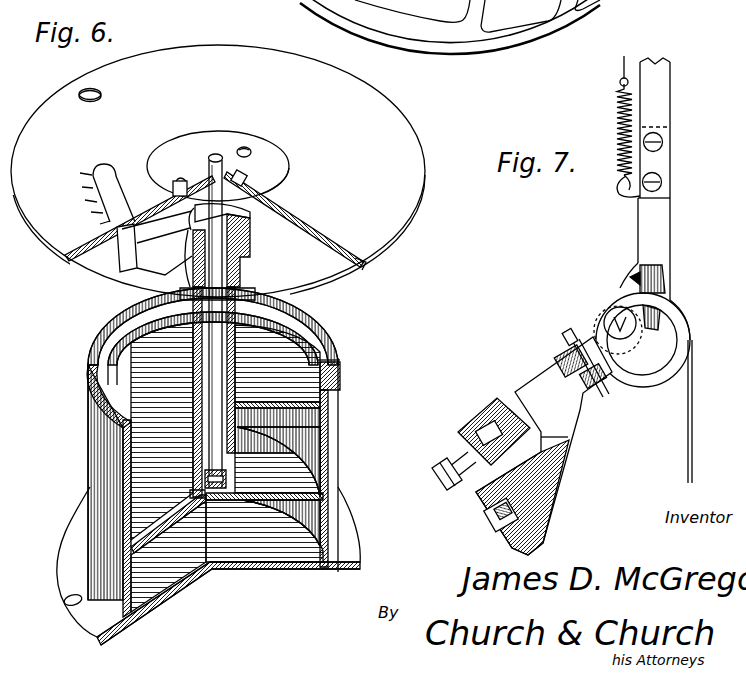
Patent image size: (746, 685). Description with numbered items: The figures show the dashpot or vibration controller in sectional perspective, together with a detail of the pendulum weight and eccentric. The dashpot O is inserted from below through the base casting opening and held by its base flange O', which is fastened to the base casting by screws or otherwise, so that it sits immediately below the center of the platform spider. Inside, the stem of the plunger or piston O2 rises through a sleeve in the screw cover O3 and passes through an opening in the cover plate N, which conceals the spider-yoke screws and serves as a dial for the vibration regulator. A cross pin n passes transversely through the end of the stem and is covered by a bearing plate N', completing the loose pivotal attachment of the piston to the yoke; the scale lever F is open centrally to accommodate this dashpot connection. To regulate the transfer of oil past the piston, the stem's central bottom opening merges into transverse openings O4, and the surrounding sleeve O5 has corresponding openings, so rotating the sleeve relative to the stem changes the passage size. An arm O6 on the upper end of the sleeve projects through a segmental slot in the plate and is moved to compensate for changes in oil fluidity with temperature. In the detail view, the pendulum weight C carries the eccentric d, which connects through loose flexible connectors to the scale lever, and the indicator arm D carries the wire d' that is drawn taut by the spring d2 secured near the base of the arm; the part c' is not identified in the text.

In FIG. 6, the cover plate N is at (227, 173).
In FIG. 6, the bearing plate N' is at (233, 166).
In FIG. 6, the cross pin n is at (248, 161).
In FIG. 6, the scale lever F is at (86, 188).
In FIG. 6, the dashpot O is at (198, 452).
In FIG. 6, the base flange O' is at (200, 566).
In FIG. 6, the plunger or piston O2 is at (170, 526).
In FIG. 6, the screw cover O3 is at (322, 404).
In FIG. 6, the transverse openings O4 is at (193, 481).
In FIG. 6, the sleeve O5 is at (236, 285).
In FIG. 6, the arm O6 is at (120, 270).
In FIG. 7, the indicator arm D is at (670, 207).
In FIG. 7, the eccentric d is at (643, 388).
In FIG. 7, the wire d' is at (603, 69).
In FIG. 7, the spring d2 is at (620, 126).
In FIG. 7, the pendulum weight C is at (553, 496).
In FIG. 7, the clamp screw block c' is at (481, 444).